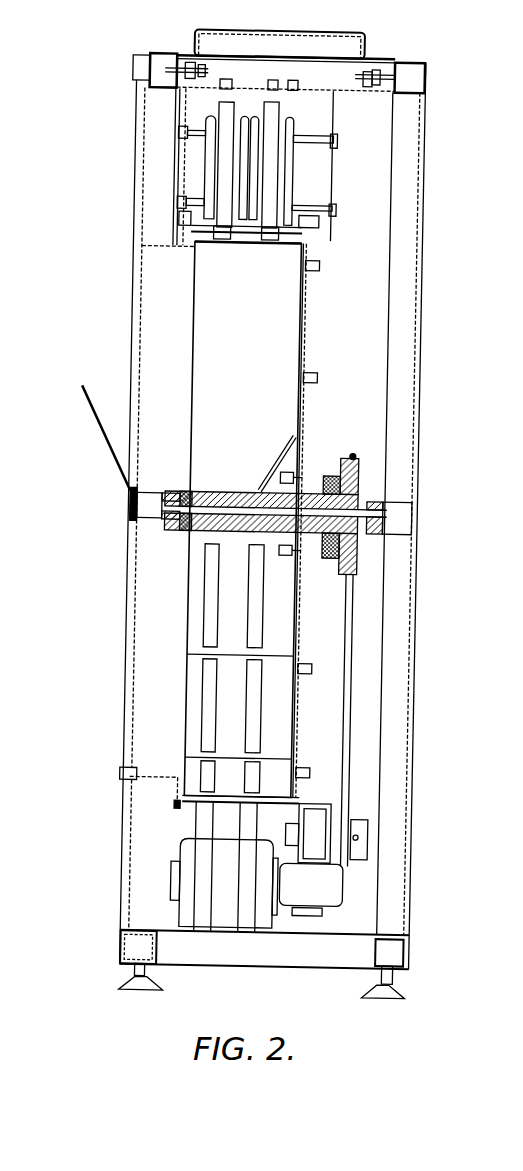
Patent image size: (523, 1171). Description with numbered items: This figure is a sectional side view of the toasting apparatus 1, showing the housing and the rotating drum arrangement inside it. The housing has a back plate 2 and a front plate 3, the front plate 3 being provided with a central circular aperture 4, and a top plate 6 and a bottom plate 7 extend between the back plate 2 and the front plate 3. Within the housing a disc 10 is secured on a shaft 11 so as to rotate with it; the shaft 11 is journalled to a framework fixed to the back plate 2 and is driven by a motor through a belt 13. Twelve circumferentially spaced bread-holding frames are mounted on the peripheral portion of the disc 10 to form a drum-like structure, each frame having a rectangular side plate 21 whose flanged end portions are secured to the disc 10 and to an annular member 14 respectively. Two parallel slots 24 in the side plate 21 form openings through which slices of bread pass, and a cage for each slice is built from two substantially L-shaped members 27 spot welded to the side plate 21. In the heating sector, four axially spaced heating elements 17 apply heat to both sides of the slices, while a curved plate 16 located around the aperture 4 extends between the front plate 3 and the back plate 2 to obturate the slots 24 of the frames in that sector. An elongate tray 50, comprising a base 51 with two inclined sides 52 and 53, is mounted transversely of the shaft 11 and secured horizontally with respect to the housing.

The apparatus 1 is at (354, 1002).
The back plate 2 is at (410, 823).
The front plate 3 is at (124, 890).
The central circular aperture 4 is at (132, 770).
The top plate 6 is at (157, 53).
The bottom plate 7 is at (297, 968).
The disc 10 is at (308, 292).
The shaft 11 is at (203, 534).
The belt 13 is at (352, 630).
The annular member 14 is at (183, 800).
The curved plate 16 is at (262, 312).
The heating elements 17 is at (238, 135).
The side plate 21 is at (192, 810).
The slots 24 is at (210, 636).
The L-shaped members 27 is at (278, 100).
The elongate tray 50 is at (102, 452).
The base 51 is at (150, 492).
The inclined side 52 is at (93, 413).
The inclined side 53 is at (289, 457).